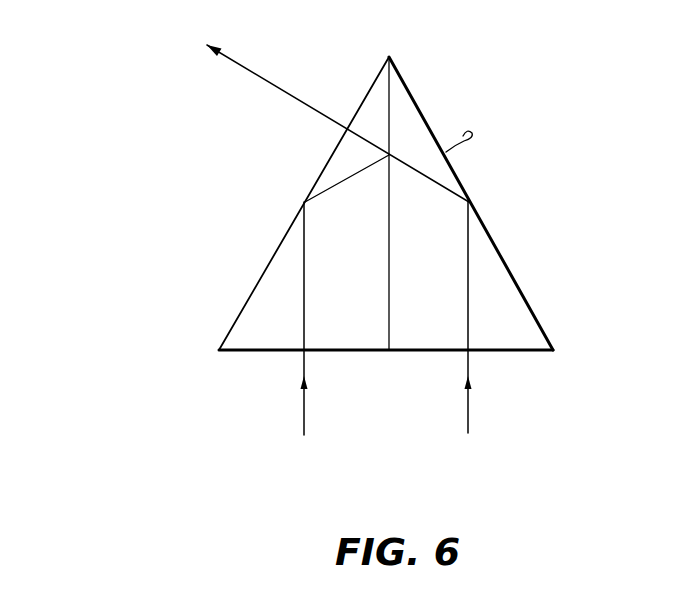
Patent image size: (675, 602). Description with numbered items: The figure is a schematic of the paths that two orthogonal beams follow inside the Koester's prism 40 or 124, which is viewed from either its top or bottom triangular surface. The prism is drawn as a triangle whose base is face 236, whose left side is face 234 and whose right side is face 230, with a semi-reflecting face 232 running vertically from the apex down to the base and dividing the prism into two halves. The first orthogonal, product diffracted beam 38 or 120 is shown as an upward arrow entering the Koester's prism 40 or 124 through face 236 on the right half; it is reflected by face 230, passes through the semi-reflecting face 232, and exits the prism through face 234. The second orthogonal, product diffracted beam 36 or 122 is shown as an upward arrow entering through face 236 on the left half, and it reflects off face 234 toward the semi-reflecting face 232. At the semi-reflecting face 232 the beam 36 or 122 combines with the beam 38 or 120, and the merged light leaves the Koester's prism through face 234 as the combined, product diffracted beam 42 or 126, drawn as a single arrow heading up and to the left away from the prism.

The Koester's prism 40 is at (408, 236).
The Koester's prism 124 is at (408, 236).
The face 230 is at (516, 283).
The semi-reflecting face 232 is at (389, 221).
The face 234 is at (252, 291).
The face 236 is at (253, 352).
The combined product diffracted beam 42 is at (258, 113).
The combined product diffracted beam 126 is at (258, 113).
The second orthogonal product diffracted beam 36 is at (305, 341).
The second orthogonal product diffracted beam 122 is at (305, 341).
The first orthogonal product diffracted beam 38 is at (502, 341).
The first orthogonal product diffracted beam 120 is at (502, 341).